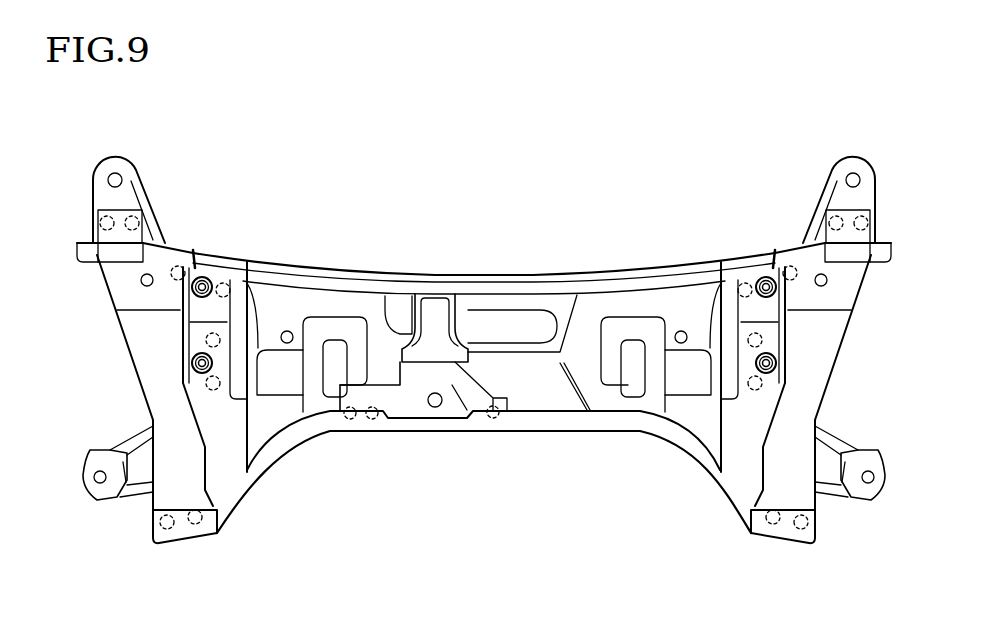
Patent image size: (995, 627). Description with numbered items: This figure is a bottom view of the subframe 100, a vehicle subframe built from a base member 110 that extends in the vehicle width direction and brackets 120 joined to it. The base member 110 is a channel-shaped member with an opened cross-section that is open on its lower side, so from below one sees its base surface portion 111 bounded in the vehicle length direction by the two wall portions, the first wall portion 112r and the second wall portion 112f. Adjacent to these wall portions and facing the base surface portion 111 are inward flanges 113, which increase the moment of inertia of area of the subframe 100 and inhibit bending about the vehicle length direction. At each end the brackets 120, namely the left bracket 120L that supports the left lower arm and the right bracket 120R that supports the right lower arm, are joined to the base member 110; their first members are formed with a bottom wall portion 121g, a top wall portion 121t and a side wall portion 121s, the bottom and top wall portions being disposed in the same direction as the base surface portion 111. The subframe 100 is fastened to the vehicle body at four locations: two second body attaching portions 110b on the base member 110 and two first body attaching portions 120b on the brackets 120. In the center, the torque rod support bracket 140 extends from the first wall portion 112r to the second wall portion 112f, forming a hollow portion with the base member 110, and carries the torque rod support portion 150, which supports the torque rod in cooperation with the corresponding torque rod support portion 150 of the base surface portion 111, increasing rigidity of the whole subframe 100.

The subframe 100 is at (624, 236).
The base member 110 is at (544, 274).
The second body attaching portion 110b is at (138, 165).
The base surface portion 111 is at (297, 310).
The first wall portion 112r is at (410, 273).
The second wall portion 112f is at (575, 432).
The inward flange 113 is at (275, 413).
The bracket 120 is at (128, 440).
The left bracket 120L is at (125, 454).
The right bracket 120R is at (833, 444).
The first body attaching portion 120b is at (92, 482).
The top wall portion 121t is at (213, 312).
The side wall portion 121s is at (180, 303).
The bottom wall portion 121g is at (133, 333).
The torque rod support bracket 140 is at (463, 340).
The torque rod support portion 150 is at (427, 412).